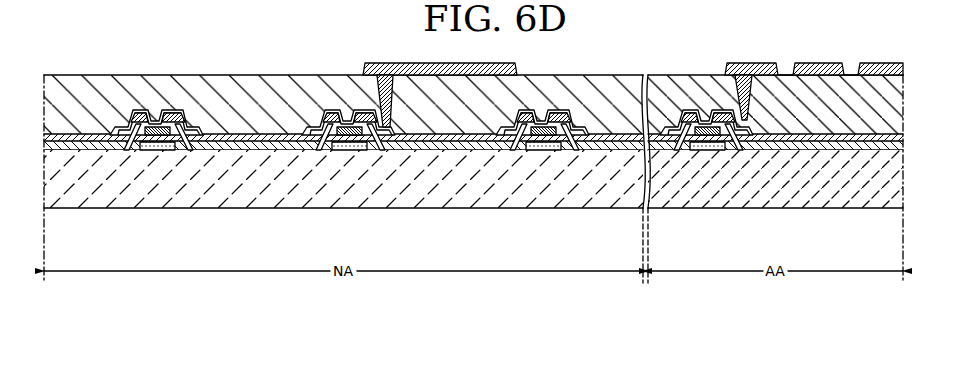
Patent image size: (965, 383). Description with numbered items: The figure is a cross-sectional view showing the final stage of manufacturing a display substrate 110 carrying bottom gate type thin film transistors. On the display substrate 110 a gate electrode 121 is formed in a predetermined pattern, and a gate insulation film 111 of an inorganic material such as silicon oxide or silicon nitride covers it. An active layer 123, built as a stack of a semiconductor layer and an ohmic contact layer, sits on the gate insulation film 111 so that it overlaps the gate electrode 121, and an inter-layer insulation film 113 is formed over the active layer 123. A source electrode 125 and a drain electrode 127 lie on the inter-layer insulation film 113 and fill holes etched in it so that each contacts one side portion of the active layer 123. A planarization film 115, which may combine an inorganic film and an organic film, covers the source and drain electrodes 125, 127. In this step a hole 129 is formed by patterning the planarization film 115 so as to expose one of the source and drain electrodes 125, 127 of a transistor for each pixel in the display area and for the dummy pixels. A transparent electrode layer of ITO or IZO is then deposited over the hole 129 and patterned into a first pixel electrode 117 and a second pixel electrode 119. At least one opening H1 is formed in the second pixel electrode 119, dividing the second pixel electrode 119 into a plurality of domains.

The display substrate 110 is at (899, 182).
The gate insulation film 111 is at (904, 146).
The inter-layer insulation film 113 is at (904, 138).
The planarization film 115 is at (899, 90).
The first pixel electrode 117 is at (457, 70).
The second pixel electrode 119 is at (904, 71).
The gate electrode 121 is at (353, 149).
The active layer 123 is at (344, 134).
The source electrode 125 is at (307, 131).
The drain electrode 127 is at (390, 129).
The hole 129 is at (740, 103).
The opening H1 is at (857, 70).